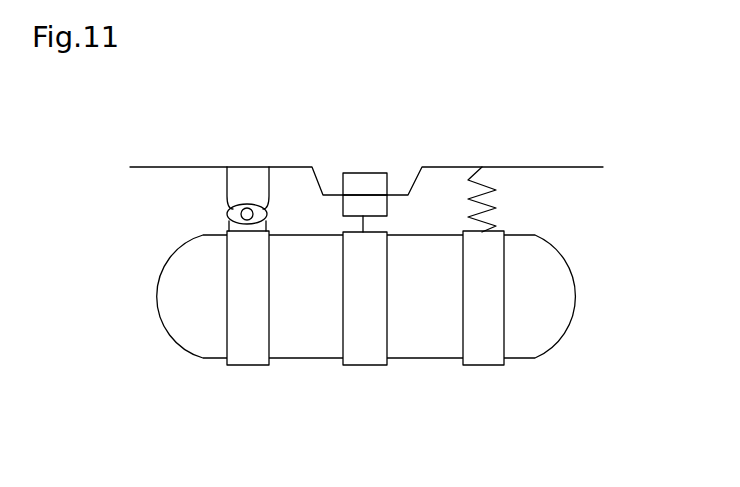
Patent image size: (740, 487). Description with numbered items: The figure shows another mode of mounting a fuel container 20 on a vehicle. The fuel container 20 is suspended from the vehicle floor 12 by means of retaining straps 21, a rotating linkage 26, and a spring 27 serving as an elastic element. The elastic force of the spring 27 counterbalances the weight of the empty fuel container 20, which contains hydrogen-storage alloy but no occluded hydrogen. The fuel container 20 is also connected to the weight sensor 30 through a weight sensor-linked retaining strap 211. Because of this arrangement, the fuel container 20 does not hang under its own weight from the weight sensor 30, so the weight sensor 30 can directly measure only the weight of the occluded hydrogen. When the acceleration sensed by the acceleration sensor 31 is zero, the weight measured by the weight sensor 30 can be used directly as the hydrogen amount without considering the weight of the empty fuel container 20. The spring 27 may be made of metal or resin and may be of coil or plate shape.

The vehicle floor 12 is at (547, 167).
The fuel container 20 is at (422, 338).
The retaining strap 21 is at (248, 345).
The weight sensor-linked retaining strap 211 is at (363, 345).
The rotating linkage 26 is at (212, 201).
The spring (elastic element) 27 is at (509, 211).
The weight sensor 30 is at (370, 205).
The acceleration sensor 31 is at (365, 182).